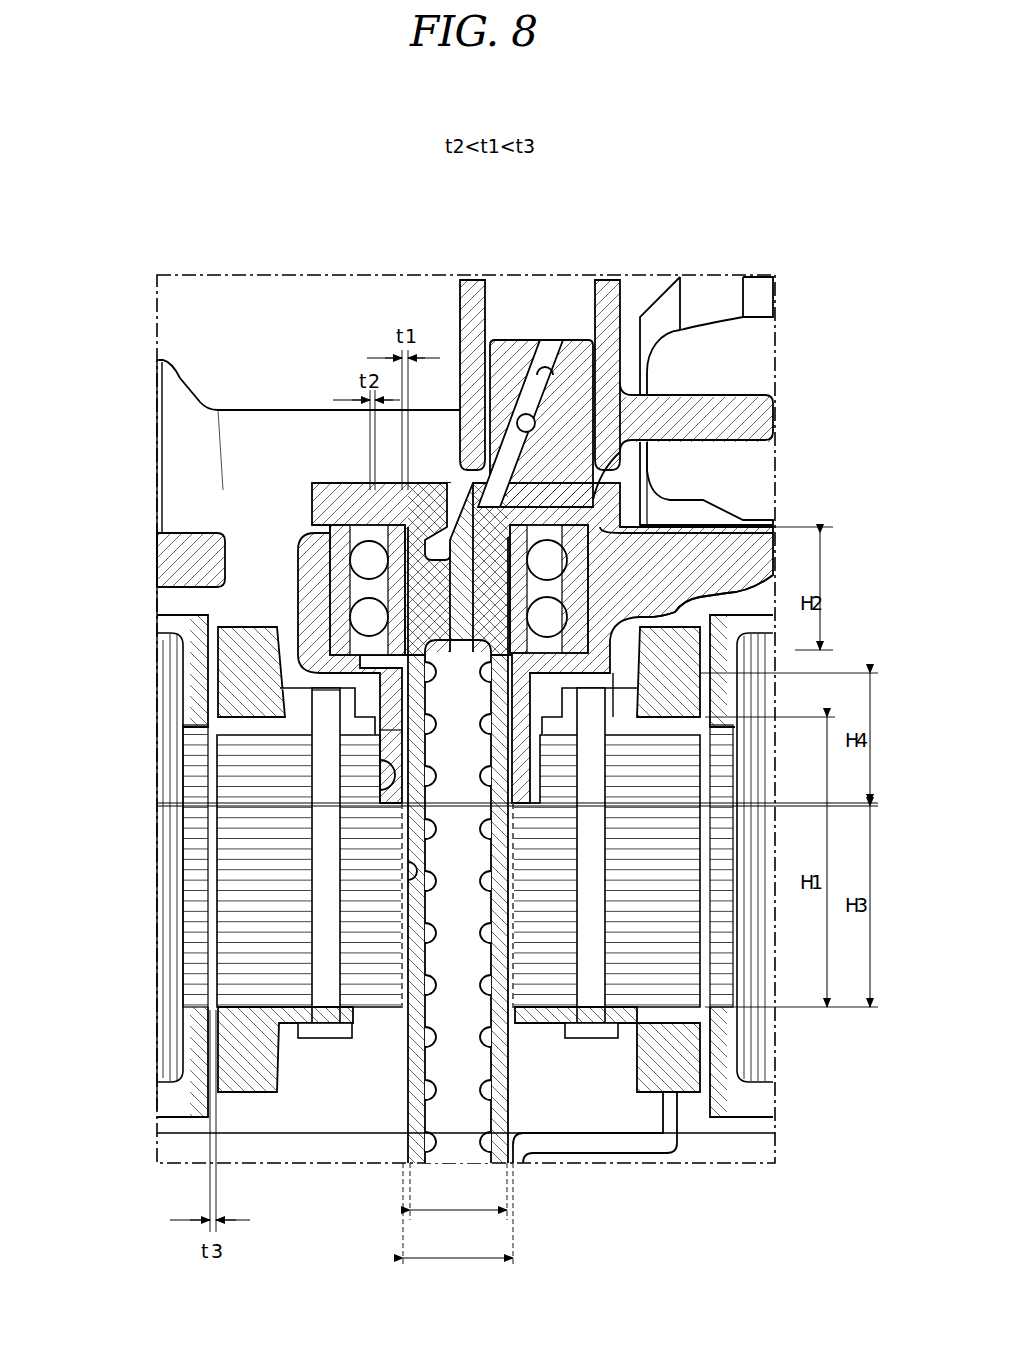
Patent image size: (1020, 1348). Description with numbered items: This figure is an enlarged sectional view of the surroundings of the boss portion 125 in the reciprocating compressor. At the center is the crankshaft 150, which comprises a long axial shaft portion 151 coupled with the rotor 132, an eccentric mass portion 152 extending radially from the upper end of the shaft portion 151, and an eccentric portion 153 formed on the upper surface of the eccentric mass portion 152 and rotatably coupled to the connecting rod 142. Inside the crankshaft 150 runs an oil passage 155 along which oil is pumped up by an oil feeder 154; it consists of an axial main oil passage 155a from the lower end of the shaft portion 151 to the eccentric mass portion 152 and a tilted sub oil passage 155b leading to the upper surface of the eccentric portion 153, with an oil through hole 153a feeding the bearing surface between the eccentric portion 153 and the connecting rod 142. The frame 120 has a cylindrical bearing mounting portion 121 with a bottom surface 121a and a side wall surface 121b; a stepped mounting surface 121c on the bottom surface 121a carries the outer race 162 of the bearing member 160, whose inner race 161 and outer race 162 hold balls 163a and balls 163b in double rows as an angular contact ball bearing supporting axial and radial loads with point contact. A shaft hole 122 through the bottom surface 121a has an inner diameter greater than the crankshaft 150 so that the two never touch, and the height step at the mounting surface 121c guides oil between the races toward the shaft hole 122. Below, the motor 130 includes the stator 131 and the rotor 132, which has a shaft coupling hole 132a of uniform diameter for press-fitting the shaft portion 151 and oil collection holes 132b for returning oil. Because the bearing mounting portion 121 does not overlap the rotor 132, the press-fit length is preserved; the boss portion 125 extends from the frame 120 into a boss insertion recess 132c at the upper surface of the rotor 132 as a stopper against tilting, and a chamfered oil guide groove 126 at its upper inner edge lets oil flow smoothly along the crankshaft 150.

The frame 120 is at (245, 392).
The eccentric mass portion 152 is at (332, 487).
The oil passage 155 is at (562, 227).
The main oil passage 155a is at (452, 487).
The sub oil passage 155b is at (545, 372).
The oil through hole 153a is at (578, 430).
The eccentric portion 153 is at (640, 315).
The connecting rod 142 is at (717, 420).
The bearing member 160 is at (880, 420).
The inner race 161 is at (520, 542).
The outer race 162 is at (557, 562).
The balls 163a is at (556, 618).
The balls 163b is at (600, 593).
The bearing mounting portion 121 is at (72, 540).
The bottom surface 121a is at (345, 618).
The side wall surface 121b is at (335, 582).
The mounting surface 121c is at (340, 635).
The oil guide groove 126 is at (395, 686).
The boss portion 125 is at (395, 692).
The shaft hole 122 is at (400, 730).
The stator 130 is at (75, 790).
The stator 131 is at (193, 813).
The rotor 132 is at (247, 847).
The shaft coupling hole 132a is at (408, 880).
The oil collection hole 132b is at (512, 975).
The boss insertion recess 132c is at (378, 788).
The crankshaft 150 is at (402, 1080).
The shaft portion 151 is at (418, 1027).
The oil feeder 154 is at (457, 1055).